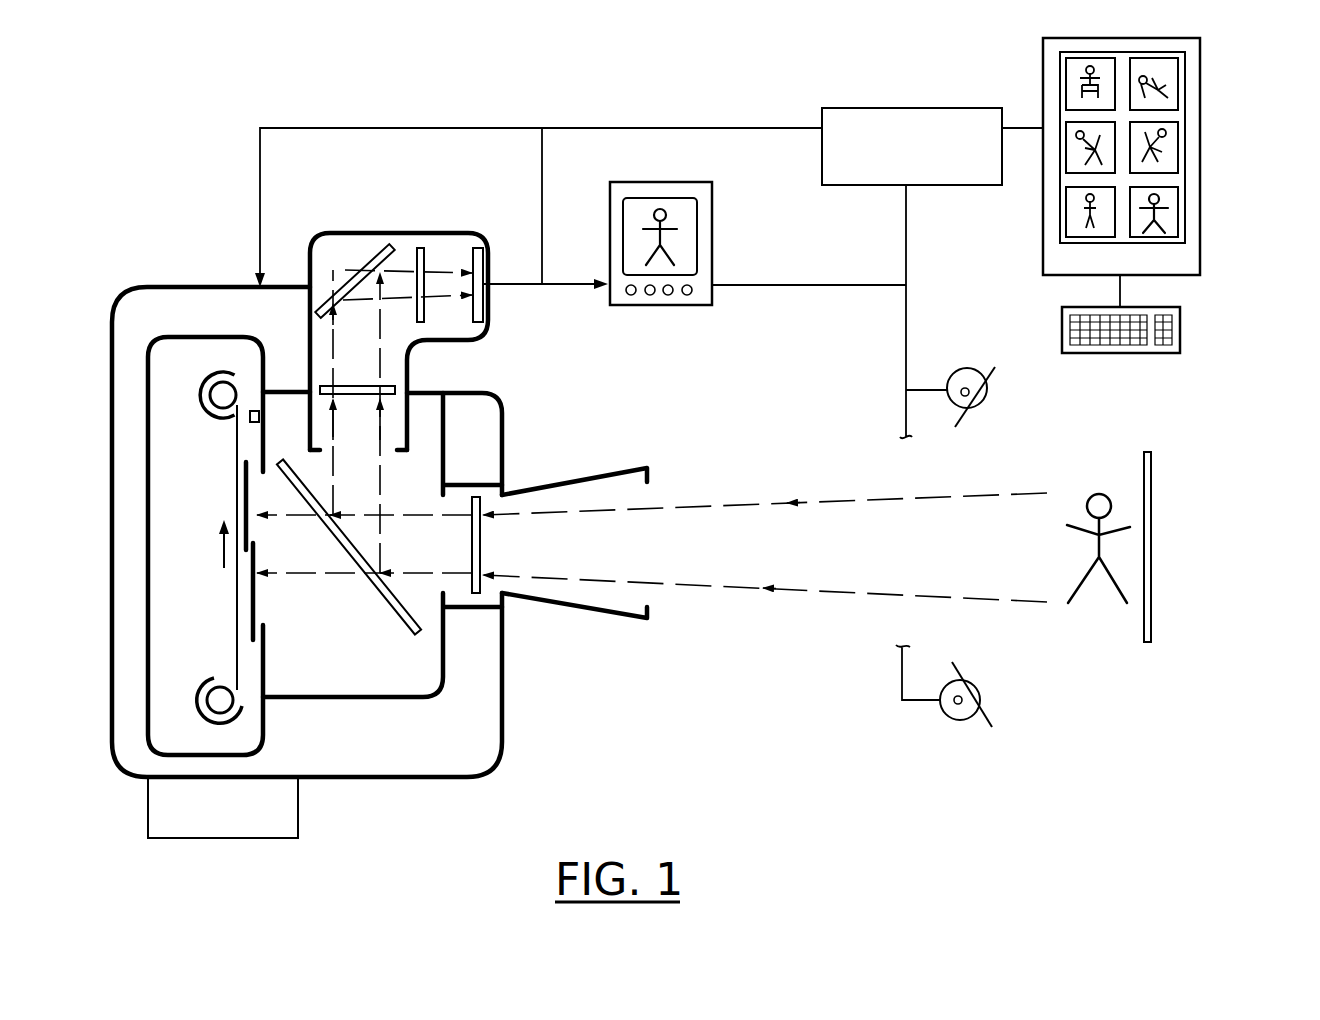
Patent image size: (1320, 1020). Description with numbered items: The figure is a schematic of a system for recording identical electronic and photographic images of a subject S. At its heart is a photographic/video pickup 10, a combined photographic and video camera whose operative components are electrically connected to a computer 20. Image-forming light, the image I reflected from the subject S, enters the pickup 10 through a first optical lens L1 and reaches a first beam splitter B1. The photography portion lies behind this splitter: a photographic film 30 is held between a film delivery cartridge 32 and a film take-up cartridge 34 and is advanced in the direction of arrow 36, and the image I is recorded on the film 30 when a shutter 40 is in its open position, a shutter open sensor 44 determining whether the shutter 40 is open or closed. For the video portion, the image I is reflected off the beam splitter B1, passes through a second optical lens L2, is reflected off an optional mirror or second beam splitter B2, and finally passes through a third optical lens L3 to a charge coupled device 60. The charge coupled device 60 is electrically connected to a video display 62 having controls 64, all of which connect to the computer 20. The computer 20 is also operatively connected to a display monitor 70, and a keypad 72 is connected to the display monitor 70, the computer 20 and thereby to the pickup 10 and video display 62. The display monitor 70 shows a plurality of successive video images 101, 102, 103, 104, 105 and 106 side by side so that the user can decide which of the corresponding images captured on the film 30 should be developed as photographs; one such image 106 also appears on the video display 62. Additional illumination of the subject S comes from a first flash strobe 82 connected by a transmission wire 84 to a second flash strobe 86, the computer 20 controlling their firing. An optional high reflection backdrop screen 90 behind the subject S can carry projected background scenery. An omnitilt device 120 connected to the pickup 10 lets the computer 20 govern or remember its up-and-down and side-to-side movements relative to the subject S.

The photographic/video pickup 10 is at (510, 423).
The computer 20 is at (860, 108).
The photographic film 30 is at (237, 630).
The film delivery cartridge 32 is at (200, 710).
The film take-up cartridge 34 is at (200, 390).
The arrow 36 is at (222, 552).
The shutter 40 is at (256, 620).
The shutter open sensor 44 is at (250, 430).
The charge coupled device 60 is at (483, 303).
The video display 62 is at (702, 273).
The controls 64 is at (690, 294).
The display monitor 70 is at (1141, 163).
The keypad 72 is at (1180, 330).
The first flash strobe 82 is at (985, 405).
The transmission wire 84 is at (906, 414).
The second flash strobe 86 is at (955, 718).
The high reflection backdrop screen 90 is at (1152, 563).
The video image 101 is at (1073, 80).
The video image 102 is at (1073, 160).
The video image 103 is at (1073, 218).
The video image 104 is at (1170, 80).
The video image 105 is at (1170, 155).
The video image 106 is at (680, 243).
The omnitilt device 120 is at (148, 838).
The first beam splitter B1 is at (405, 630).
The second beam splitter B2 is at (352, 250).
The first optical lens L1 is at (482, 547).
The second optical lens L2 is at (375, 385).
The third optical lens L3 is at (425, 257).
The image I is at (757, 504).
The subject S is at (1110, 590).